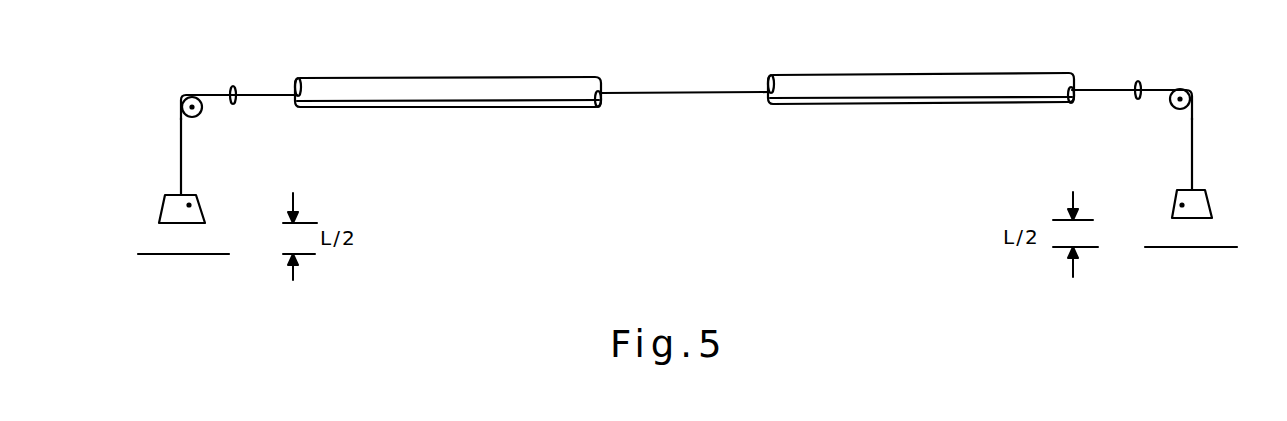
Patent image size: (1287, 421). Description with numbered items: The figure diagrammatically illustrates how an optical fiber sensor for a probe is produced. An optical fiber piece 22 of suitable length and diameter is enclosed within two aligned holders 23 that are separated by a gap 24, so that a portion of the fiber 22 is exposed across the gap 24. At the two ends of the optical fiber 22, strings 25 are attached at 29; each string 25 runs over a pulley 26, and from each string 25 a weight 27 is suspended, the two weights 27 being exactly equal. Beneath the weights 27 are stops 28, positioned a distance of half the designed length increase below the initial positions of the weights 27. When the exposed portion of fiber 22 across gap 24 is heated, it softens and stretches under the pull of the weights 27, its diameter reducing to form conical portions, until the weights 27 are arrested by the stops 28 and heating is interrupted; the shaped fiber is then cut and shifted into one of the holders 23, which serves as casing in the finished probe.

The optical fiber piece 22 is at (281, 94).
The holders 23 is at (458, 91).
The gap 24 is at (667, 93).
The strings 25 is at (180, 170).
The pulley 26 is at (201, 113).
The weight 27 is at (200, 207).
The stops 28 is at (178, 254).
The attachment point 29 is at (228, 86).